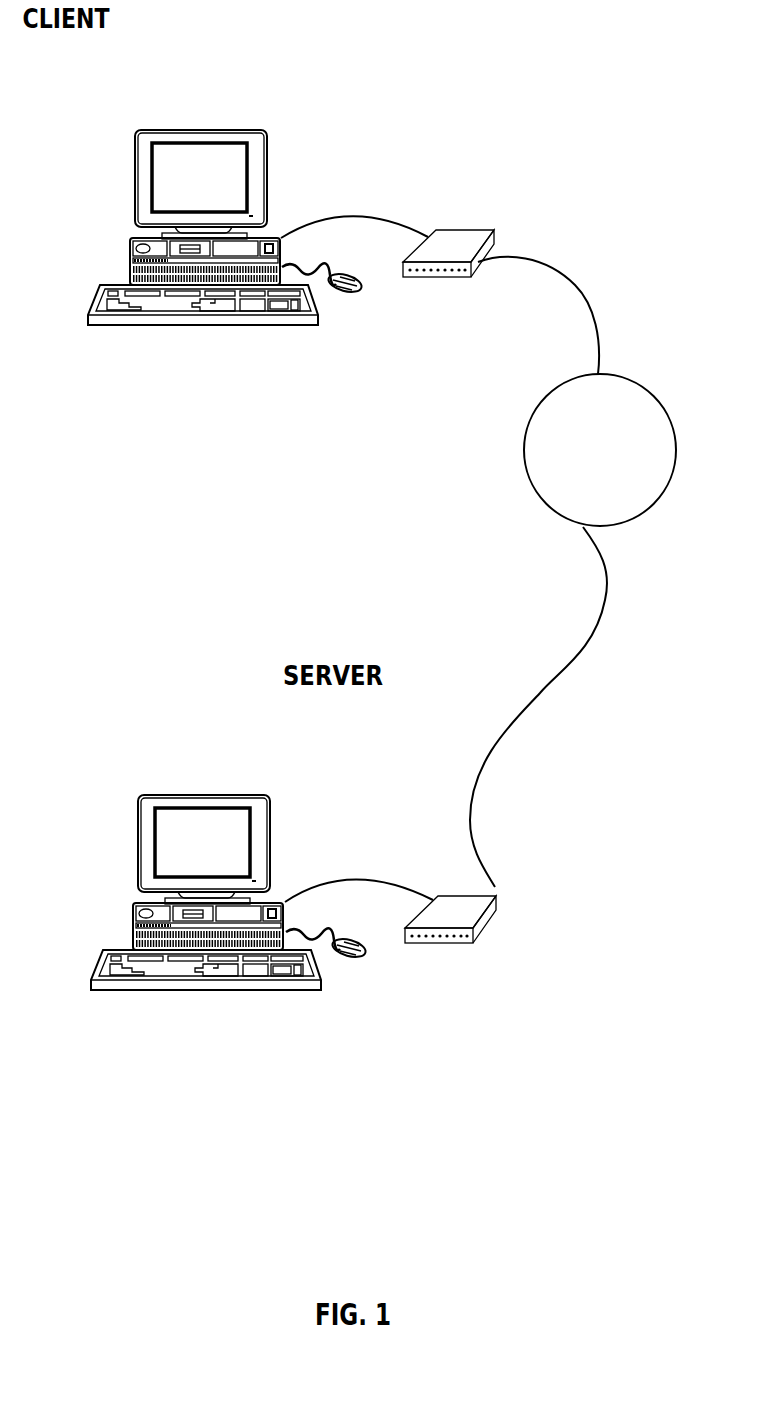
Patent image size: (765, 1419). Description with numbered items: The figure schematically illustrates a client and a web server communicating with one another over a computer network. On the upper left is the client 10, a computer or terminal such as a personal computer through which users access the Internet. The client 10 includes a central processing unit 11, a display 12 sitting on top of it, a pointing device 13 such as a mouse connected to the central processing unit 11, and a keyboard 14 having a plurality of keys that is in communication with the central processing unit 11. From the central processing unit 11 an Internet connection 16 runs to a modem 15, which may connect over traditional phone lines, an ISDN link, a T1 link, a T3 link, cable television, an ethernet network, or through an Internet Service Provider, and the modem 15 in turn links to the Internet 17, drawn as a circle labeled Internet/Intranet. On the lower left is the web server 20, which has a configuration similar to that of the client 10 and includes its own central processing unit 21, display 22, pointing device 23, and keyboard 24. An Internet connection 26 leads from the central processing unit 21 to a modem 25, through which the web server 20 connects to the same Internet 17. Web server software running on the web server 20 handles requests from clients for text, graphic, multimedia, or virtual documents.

The client 10 is at (108, 86).
The central processing unit 11 is at (130, 240).
The display 12 is at (158, 180).
The pointing device 13 is at (357, 294).
The keyboard 14 is at (132, 327).
The modem 15 is at (473, 272).
The Internet connection 16 is at (358, 213).
The Internet 17 is at (520, 442).
The web server 20 is at (286, 736).
The central processing unit 21 is at (133, 903).
The display 22 is at (160, 845).
The pointing device 23 is at (363, 954).
The keyboard 24 is at (135, 990).
The modem 25 is at (477, 938).
The Internet connection 26 is at (363, 877).